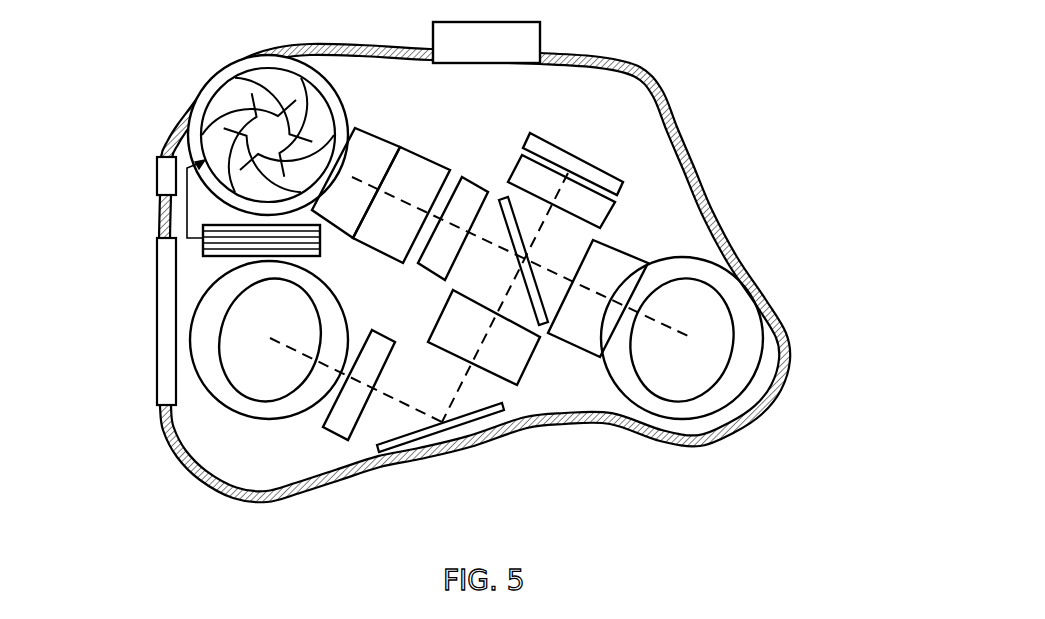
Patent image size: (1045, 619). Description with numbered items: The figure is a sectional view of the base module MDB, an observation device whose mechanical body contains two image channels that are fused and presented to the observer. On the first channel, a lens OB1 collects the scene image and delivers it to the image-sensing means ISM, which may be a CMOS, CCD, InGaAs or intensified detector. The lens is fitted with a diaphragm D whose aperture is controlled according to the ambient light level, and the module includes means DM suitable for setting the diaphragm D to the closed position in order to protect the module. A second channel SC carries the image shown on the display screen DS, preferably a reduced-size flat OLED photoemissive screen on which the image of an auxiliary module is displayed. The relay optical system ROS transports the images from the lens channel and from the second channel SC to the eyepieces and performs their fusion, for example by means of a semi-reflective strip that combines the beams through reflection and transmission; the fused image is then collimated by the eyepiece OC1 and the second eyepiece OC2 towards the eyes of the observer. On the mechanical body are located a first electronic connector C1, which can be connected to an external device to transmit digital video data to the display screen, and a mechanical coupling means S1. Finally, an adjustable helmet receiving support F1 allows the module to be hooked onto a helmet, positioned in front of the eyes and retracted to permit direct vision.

The base module MDB is at (762, 162).
The lens OB1 is at (213, 80).
The diaphragm D is at (192, 127).
The adjustable helmet receiving support F1 is at (533, 33).
The mechanical coupling means S1 is at (157, 176).
The first electronic connector C1 is at (158, 348).
The diaphragm setting means DM is at (203, 245).
The eyepiece OC1 is at (262, 408).
The image-sensing means ISM is at (421, 162).
The display screen DS is at (580, 167).
The relay optical system ROS is at (441, 345).
The second channel SC is at (588, 335).
The second eyepiece OC2 is at (750, 355).